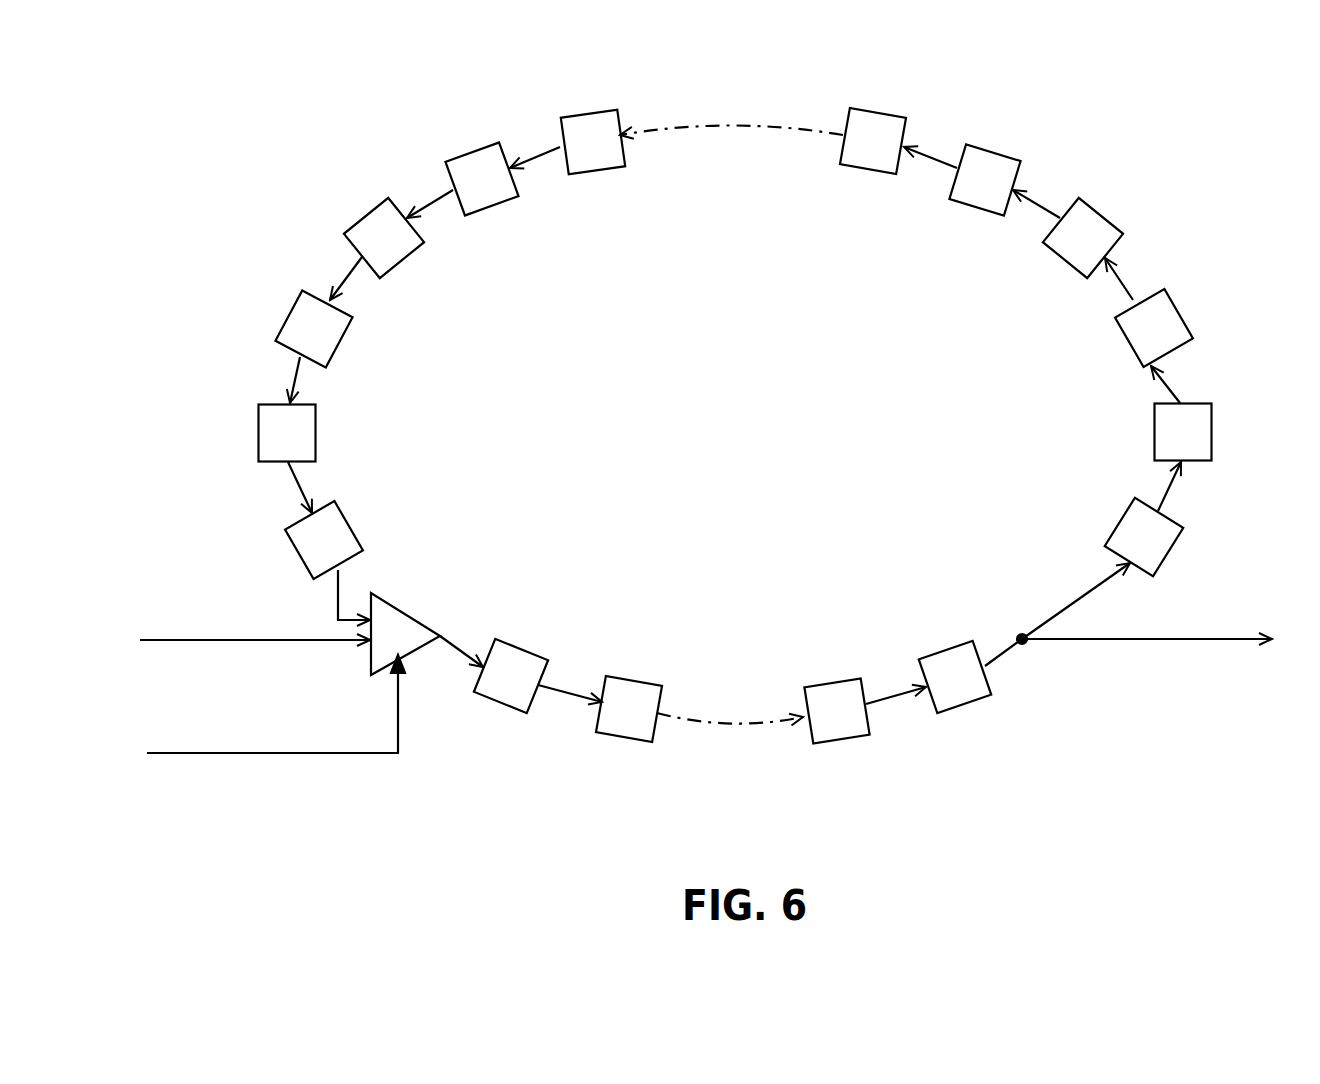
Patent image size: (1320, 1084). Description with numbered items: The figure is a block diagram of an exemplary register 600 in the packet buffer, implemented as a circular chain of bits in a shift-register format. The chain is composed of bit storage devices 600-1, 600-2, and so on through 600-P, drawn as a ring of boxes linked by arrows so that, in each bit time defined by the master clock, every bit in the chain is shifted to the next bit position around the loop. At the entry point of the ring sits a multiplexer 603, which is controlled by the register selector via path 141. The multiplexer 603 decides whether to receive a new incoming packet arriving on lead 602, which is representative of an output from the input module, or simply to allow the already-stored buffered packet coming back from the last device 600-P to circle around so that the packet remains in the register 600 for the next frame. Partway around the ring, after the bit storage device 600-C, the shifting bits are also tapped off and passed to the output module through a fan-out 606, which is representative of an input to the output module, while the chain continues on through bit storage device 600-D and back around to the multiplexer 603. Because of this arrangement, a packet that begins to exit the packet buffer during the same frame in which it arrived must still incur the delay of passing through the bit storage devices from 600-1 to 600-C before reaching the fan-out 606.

The register 600 is at (774, 435).
The bit storage device 600-P is at (353, 525).
The bit storage device 600-1 is at (520, 648).
The bit storage device 600-2 is at (630, 683).
The bit storage device 600-C is at (943, 650).
The bit storage device 600-D is at (1115, 525).
The lead 602 is at (188, 640).
The multiplexer 603 is at (412, 652).
The path 141 is at (300, 753).
The fan-out 606 is at (1198, 639).